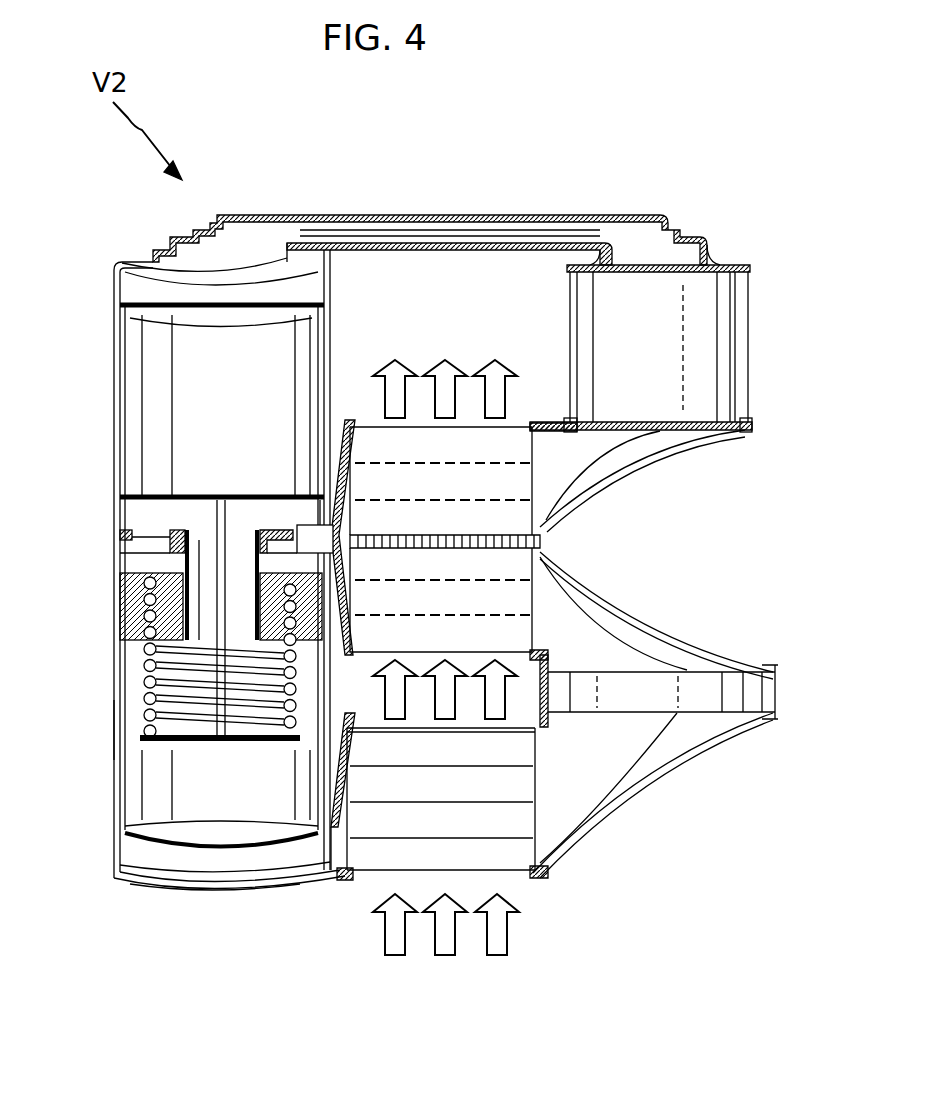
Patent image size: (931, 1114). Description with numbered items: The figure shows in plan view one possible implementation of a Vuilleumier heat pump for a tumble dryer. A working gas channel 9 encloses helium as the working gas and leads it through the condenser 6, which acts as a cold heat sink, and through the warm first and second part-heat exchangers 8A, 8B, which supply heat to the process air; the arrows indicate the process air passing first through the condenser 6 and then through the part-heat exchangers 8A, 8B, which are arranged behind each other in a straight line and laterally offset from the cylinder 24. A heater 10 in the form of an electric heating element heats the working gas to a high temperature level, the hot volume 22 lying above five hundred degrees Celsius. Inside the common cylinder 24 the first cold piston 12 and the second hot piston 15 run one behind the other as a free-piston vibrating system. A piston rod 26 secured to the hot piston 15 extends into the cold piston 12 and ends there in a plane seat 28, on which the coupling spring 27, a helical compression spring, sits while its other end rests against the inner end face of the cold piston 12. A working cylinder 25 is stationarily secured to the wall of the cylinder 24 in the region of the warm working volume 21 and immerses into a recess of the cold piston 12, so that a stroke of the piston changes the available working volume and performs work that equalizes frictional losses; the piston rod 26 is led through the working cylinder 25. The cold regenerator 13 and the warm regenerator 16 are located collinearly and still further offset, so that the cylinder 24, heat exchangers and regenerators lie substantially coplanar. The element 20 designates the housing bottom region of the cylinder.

The condenser 6 is at (390, 850).
The first part-heat exchanger 8A is at (523, 597).
The second part-heat exchanger 8B is at (500, 450).
The working gas channel 9 is at (631, 258).
The heater 10 is at (418, 230).
The first piston 12 is at (120, 795).
The cold regenerator 13 is at (750, 698).
The second piston 15 is at (120, 408).
The warm regenerator 16 is at (723, 347).
The housing bottom 20 is at (187, 873).
The warm working volume 21 is at (140, 517).
The hot volume 22 is at (152, 290).
The cylinder 24 is at (110, 722).
The working cylinder 25 is at (193, 563).
The piston rod 26 is at (225, 522).
The coupling spring 27 is at (150, 679).
The plane seat 28 is at (240, 747).